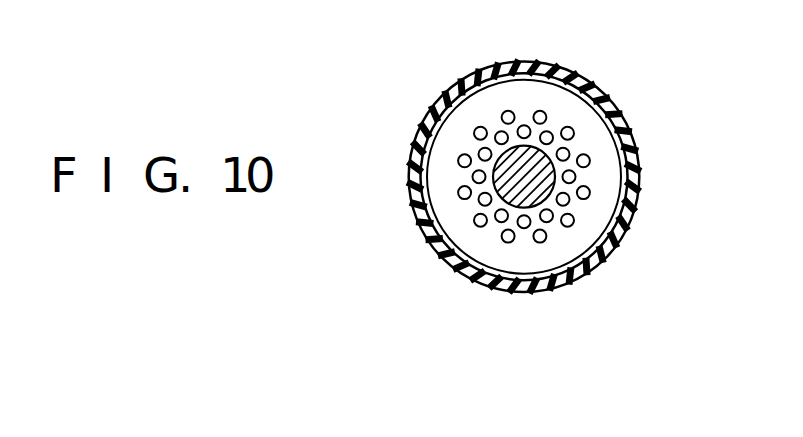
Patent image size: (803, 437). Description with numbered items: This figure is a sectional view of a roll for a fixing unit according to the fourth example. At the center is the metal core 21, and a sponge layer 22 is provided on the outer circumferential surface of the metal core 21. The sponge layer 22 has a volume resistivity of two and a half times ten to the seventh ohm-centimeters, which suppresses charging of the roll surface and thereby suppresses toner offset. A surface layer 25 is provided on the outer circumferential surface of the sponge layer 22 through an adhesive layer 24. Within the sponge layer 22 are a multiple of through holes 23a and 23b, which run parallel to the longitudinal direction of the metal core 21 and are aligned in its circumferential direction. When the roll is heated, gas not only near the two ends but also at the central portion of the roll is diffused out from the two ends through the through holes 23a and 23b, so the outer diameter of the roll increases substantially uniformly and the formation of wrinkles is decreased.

The metal core 21 is at (507, 192).
The sponge layer 22 is at (530, 95).
The through holes 23a is at (529, 225).
The through holes 23b is at (590, 161).
The adhesive layer 24 is at (412, 148).
The surface layer 25 is at (589, 189).